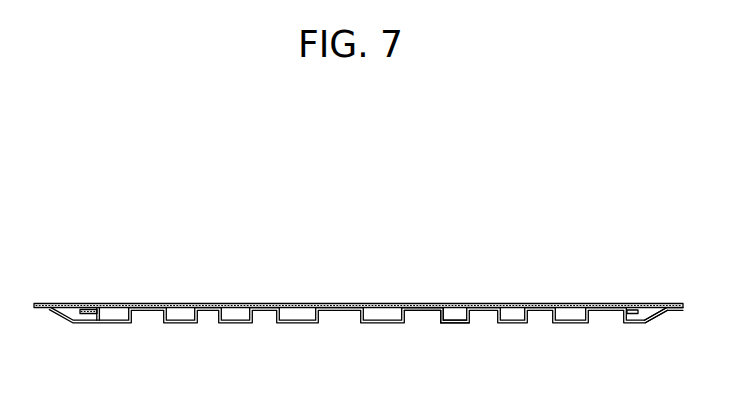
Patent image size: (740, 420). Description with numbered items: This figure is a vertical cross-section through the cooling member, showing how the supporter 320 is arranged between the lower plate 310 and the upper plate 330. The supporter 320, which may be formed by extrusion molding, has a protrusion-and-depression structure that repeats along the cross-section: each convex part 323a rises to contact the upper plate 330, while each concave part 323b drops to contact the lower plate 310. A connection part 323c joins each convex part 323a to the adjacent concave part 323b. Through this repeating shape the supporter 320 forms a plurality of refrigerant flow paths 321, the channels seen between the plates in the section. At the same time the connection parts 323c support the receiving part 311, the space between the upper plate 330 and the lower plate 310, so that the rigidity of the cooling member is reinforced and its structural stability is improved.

The supporter 320 is at (310, 304).
The refrigerant flow path 321 is at (380, 315).
The convex part 323a is at (424, 309).
The concave part 323b is at (452, 323).
The connection part 323c is at (457, 312).
The upper plate 330 is at (566, 303).
The lower plate 310 is at (537, 323).
The receiving part 311 is at (641, 312).